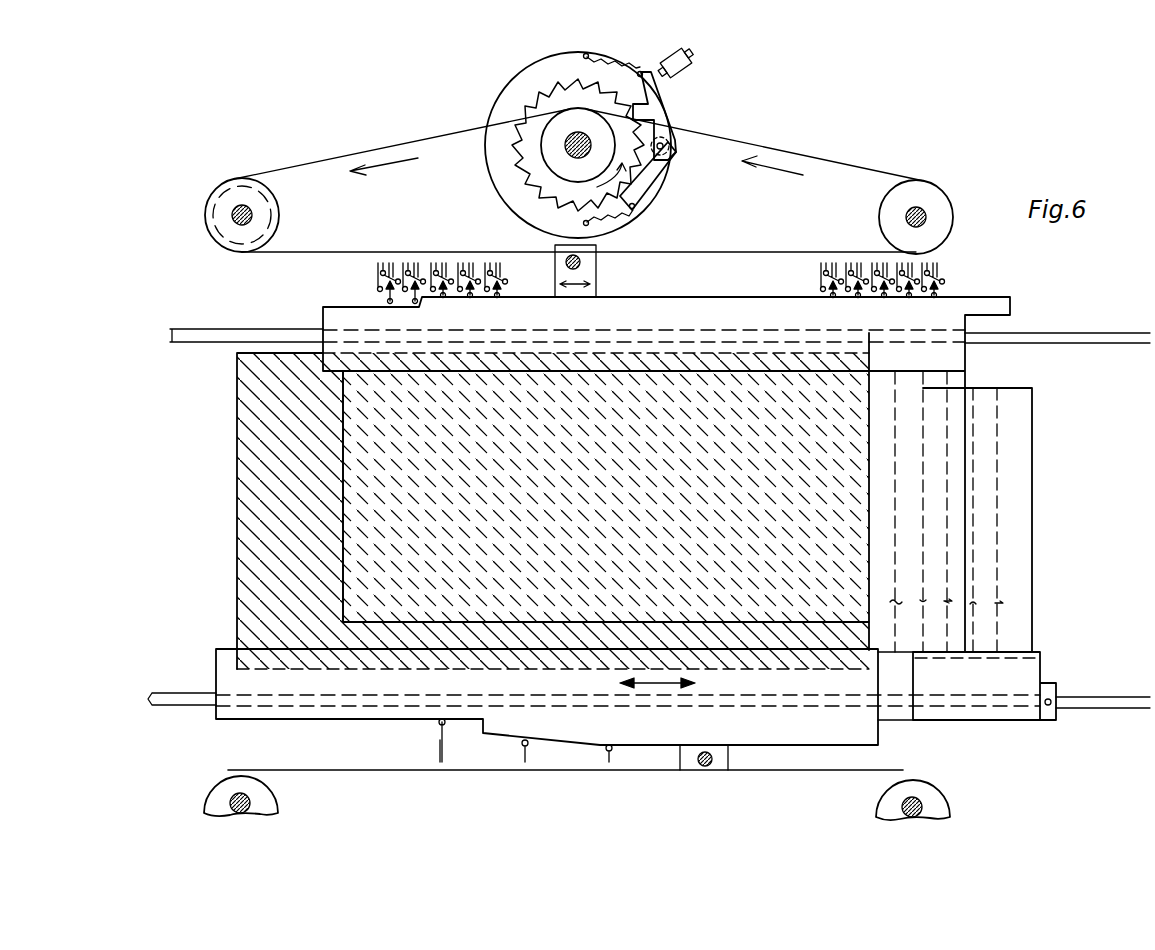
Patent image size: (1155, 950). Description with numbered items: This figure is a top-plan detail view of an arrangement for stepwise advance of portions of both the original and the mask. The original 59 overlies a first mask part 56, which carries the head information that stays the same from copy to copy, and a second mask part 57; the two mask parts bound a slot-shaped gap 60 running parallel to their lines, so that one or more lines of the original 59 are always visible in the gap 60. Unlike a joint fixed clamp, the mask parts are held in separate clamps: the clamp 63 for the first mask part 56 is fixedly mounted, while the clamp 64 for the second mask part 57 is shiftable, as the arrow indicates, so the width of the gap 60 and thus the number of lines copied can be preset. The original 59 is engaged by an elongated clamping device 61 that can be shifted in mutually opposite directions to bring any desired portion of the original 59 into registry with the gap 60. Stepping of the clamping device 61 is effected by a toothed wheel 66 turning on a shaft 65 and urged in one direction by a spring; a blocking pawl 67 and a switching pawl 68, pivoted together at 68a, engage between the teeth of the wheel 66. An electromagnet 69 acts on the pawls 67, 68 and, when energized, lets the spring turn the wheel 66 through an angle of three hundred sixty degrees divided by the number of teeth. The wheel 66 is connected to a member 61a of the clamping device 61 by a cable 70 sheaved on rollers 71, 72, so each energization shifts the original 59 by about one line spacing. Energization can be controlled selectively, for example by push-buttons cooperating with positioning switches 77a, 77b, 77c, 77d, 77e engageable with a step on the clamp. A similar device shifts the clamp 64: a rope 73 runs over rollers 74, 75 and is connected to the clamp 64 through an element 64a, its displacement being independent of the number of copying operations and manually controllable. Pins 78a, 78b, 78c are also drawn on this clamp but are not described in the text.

The first mask part 56 is at (1020, 437).
The second mask part 57 is at (250, 541).
The original 59 is at (357, 407).
The gap 60 is at (900, 647).
The clamping device 61 is at (958, 354).
The member 61a is at (580, 265).
The clamp 63 is at (1030, 670).
The clamp 64 is at (225, 676).
The element 64a is at (692, 762).
The shaft 65 is at (565, 140).
The toothed wheel 66 is at (552, 92).
The blocking pawl 67 is at (652, 183).
The switching pawl 68 is at (670, 112).
The pivot 68a is at (672, 144).
The electromagnet 69 is at (693, 63).
The cable 70 is at (307, 164).
The roller 71 is at (918, 192).
The roller 72 is at (222, 184).
The rope 73 is at (807, 772).
The roller 74 is at (952, 802).
The roller 75 is at (206, 796).
The positioning switch 77a is at (391, 272).
The positioning switch 77b is at (414, 277).
The positioning switch 77c is at (447, 270).
The positioning switch 77d is at (472, 273).
The positioning switch 77e is at (501, 268).
The pin 78a is at (440, 752).
The pin 78b is at (521, 763).
The pin 78c is at (608, 763).